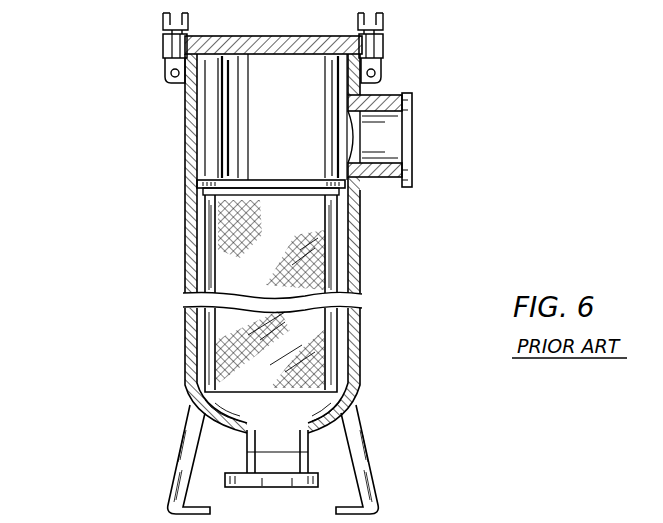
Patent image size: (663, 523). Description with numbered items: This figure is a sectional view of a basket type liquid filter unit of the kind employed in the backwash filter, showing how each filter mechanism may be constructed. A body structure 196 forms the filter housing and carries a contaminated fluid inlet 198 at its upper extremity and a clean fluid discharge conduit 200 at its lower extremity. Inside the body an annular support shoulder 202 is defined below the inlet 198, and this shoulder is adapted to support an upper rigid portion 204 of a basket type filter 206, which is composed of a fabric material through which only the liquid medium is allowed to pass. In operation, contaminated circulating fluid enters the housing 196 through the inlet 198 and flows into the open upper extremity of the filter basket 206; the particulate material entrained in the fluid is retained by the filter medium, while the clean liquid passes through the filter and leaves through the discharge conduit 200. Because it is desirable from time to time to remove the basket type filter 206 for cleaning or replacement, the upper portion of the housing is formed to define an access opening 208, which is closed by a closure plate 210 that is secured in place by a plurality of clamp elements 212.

The body structure 196 is at (357, 270).
The contaminated fluid inlet 198 is at (375, 135).
The clean fluid discharge conduit 200 is at (285, 449).
The annular support shoulder 202 is at (210, 196).
The upper rigid portion 204 is at (213, 178).
The basket type filter 206 is at (215, 335).
The access opening 208 is at (385, 55).
The closure plate 210 is at (250, 57).
The clamp elements 212 is at (162, 23).